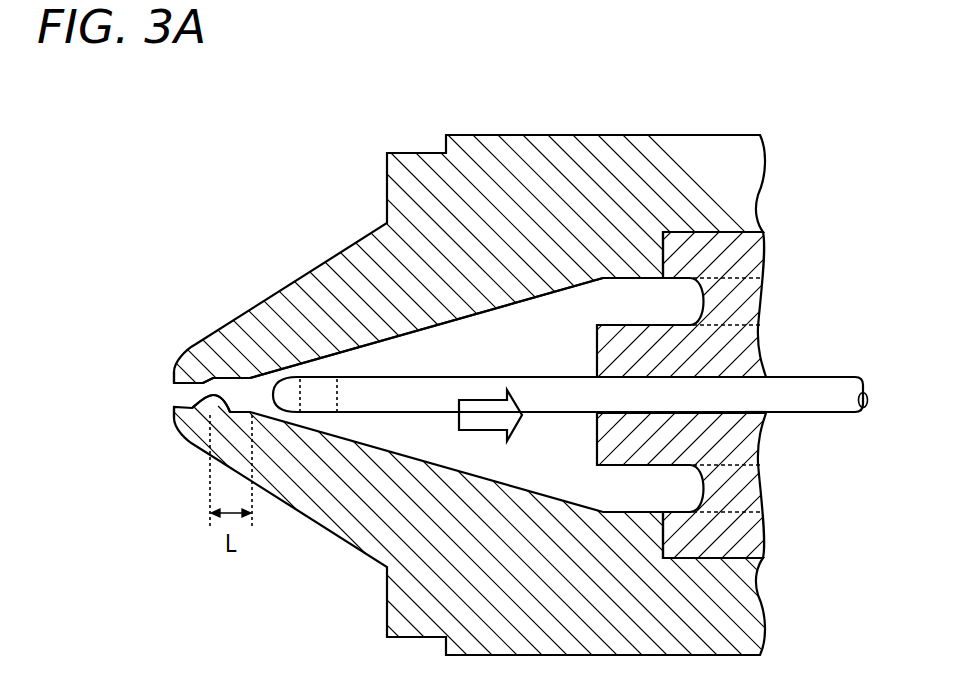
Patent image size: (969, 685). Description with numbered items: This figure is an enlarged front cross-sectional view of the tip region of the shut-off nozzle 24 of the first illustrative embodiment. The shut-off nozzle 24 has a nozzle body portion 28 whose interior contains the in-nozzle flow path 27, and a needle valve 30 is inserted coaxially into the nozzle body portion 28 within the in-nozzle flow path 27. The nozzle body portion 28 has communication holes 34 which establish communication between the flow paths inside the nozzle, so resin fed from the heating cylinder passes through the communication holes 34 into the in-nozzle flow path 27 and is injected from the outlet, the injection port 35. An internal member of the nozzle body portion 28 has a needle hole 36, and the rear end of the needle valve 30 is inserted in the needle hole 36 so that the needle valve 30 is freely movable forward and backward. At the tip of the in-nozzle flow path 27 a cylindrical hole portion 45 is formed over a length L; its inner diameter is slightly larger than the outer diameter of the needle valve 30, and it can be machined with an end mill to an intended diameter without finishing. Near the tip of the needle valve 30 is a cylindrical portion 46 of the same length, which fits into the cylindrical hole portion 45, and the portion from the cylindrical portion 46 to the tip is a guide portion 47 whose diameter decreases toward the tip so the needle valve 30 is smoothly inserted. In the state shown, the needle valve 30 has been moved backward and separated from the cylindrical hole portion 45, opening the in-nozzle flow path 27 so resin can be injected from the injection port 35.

The shut-off nozzle 24 is at (290, 118).
The in-nozzle flow path 27 is at (393, 442).
The nozzle body portion 28 is at (285, 208).
The needle valve 30 is at (812, 378).
The communication hole 34 is at (753, 308).
The injection port 35 is at (172, 393).
The needle hole 36 is at (745, 412).
The cylindrical hole portion 45 is at (195, 408).
The cylindrical portion 46 is at (315, 382).
The guide portion 47 is at (278, 390).